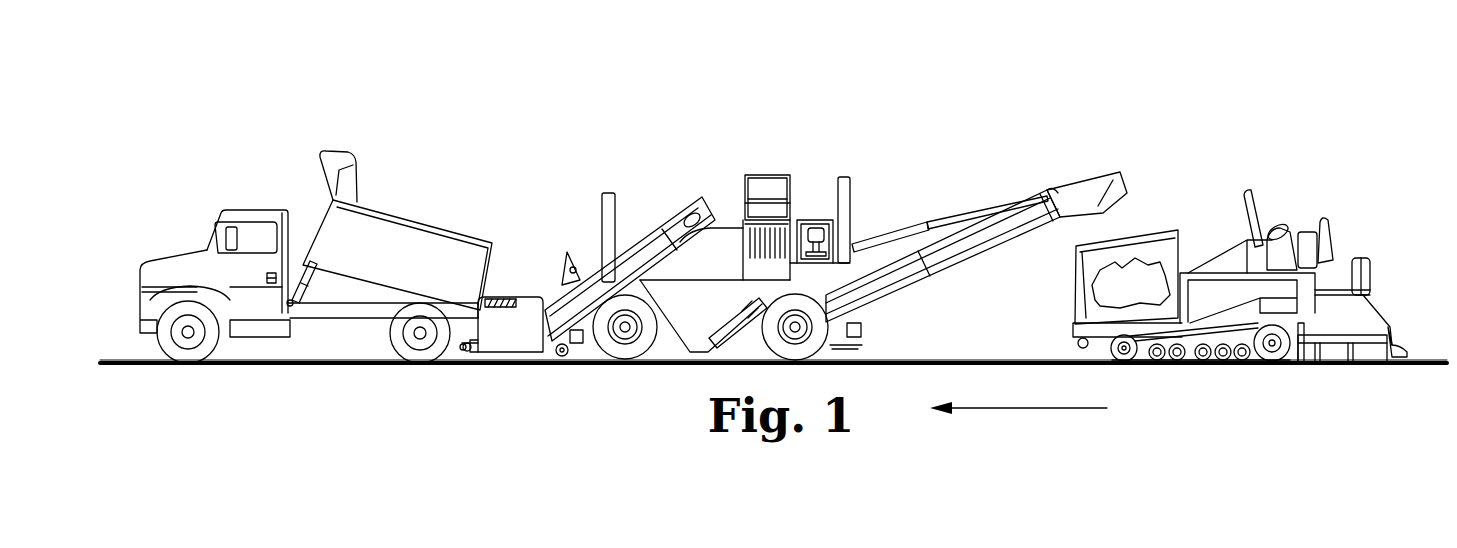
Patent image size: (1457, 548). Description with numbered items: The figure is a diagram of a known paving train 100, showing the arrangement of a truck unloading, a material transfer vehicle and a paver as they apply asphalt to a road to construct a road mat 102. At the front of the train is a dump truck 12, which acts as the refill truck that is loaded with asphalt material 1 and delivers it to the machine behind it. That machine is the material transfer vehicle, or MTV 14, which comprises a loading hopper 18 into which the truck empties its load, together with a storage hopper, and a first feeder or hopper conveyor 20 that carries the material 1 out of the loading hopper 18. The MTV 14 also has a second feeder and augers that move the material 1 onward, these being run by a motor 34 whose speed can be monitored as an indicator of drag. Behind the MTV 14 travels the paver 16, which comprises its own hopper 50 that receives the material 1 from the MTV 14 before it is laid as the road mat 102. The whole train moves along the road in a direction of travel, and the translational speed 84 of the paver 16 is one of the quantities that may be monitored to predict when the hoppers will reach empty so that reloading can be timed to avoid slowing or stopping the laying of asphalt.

The paving train 100 is at (898, 96).
The dump truck 12 is at (292, 196).
The material transfer vehicle (MTV) 14 is at (578, 214).
The paver 16 is at (1272, 184).
The loading hopper 18 is at (505, 340).
The first feeder (hopper conveyor) 20 is at (556, 296).
The motor 34 is at (677, 216).
The material 1 is at (1142, 268).
The paver hopper 50 is at (1150, 238).
The translational speed 84 is at (1002, 438).
The road mat 102 is at (1429, 356).